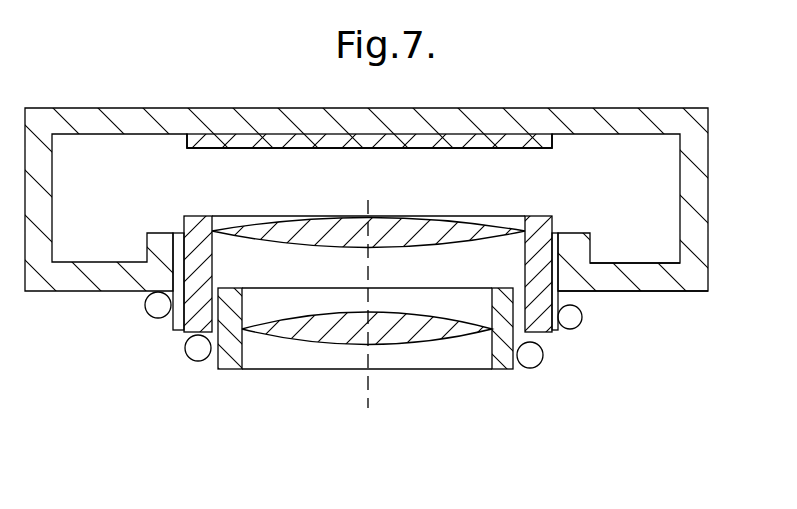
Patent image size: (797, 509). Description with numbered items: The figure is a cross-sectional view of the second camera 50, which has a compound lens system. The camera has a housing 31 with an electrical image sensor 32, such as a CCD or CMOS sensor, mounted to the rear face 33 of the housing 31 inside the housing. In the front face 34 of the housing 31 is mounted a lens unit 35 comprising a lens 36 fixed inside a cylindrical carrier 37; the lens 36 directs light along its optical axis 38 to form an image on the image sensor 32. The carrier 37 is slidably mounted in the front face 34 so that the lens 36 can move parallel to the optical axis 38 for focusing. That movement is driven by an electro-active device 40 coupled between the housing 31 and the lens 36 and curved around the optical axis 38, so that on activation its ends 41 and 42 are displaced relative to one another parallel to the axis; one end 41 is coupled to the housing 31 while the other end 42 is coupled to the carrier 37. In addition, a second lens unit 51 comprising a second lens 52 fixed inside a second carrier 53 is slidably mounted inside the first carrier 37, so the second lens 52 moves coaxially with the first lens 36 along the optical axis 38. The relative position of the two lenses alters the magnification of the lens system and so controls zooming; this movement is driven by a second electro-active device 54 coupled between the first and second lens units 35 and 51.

The second camera 50 is at (102, 94).
The housing 31 is at (706, 196).
The electrical image sensor 32 is at (538, 145).
The rear face 33 is at (477, 125).
The front face 34 is at (610, 283).
The lens unit 35 is at (224, 200).
The lens 36 is at (432, 226).
The cylindrical carrier 37 is at (538, 217).
The optical axis 38 is at (367, 204).
The electro-active device 40 is at (180, 326).
The end of electro-active device 41 is at (163, 304).
The end of electro-active device 42 is at (570, 319).
The second lens unit 51 is at (309, 379).
The second lens 52 is at (418, 334).
The second carrier 53 is at (503, 348).
The second electro-active device 54 is at (220, 369).